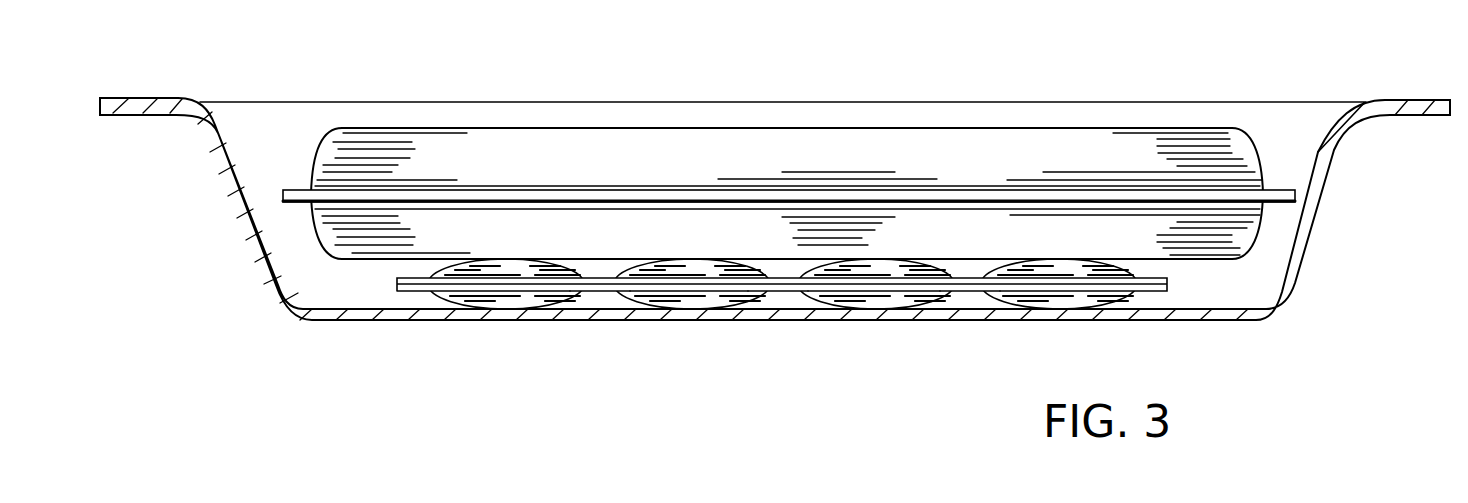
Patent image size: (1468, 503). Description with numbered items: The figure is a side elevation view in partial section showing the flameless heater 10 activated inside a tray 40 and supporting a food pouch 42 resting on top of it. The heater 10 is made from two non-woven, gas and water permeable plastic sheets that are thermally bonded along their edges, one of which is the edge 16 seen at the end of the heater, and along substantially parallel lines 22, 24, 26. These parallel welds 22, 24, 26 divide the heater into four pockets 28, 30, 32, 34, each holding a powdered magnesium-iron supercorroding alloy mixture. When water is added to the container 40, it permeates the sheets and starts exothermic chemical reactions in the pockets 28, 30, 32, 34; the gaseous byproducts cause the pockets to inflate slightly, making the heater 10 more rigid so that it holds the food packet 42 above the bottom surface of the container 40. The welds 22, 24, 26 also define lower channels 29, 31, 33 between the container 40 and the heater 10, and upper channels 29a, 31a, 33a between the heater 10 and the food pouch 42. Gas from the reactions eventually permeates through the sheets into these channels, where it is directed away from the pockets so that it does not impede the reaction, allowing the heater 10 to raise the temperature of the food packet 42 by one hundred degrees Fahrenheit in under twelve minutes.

The flameless heater 10 is at (752, 243).
The edge 16 is at (402, 300).
The parallel line 22 is at (968, 295).
The parallel line 24 is at (776, 295).
The parallel line 26 is at (601, 295).
The pocket 28 is at (1047, 303).
The lower channel 29 is at (978, 304).
The upper channel 29a is at (971, 270).
The pocket 30 is at (870, 305).
The lower channel 31 is at (790, 300).
The upper channel 31a is at (786, 265).
The pocket 32 is at (685, 305).
The lower channel 33 is at (578, 305).
The upper channel 33a is at (606, 267).
The pocket 34 is at (503, 306).
The tray 40 is at (1300, 253).
The food pouch 42 is at (613, 155).